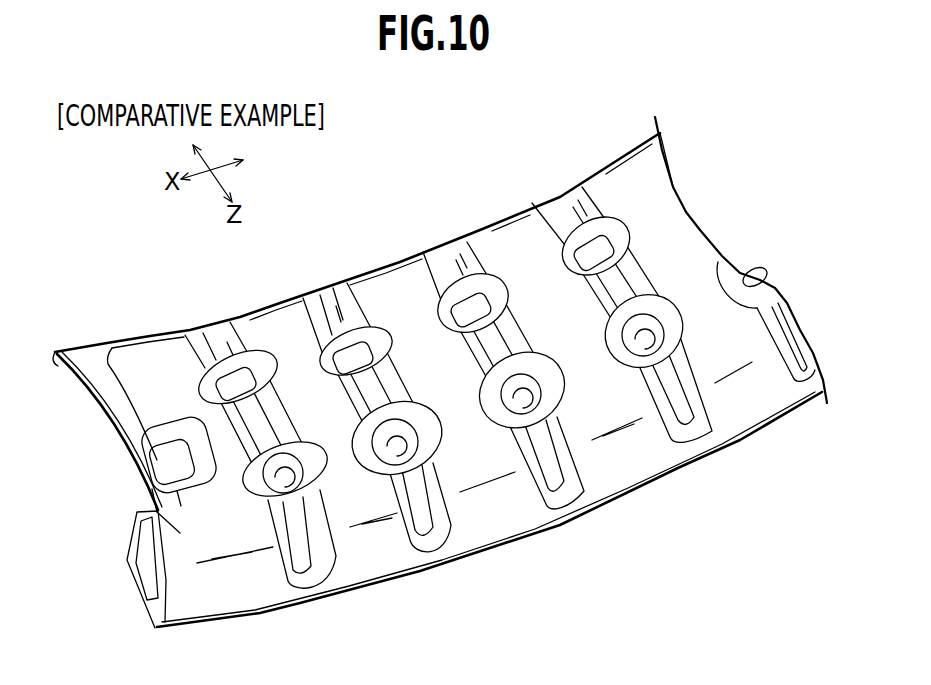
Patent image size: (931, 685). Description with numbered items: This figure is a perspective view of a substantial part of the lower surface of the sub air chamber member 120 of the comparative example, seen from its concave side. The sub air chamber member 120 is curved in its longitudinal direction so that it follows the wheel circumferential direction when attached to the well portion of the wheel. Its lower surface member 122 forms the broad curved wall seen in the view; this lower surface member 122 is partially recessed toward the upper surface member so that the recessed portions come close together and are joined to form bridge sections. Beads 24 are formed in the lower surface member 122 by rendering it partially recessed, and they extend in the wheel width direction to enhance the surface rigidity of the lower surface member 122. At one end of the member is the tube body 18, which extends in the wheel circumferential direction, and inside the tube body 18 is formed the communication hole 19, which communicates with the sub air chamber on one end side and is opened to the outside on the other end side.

The sub air chamber member 120 is at (510, 149).
The lower surface member 122 is at (387, 548).
The beads 24 is at (303, 543).
The tube body 18 is at (152, 511).
The communication hole 19 is at (147, 577).